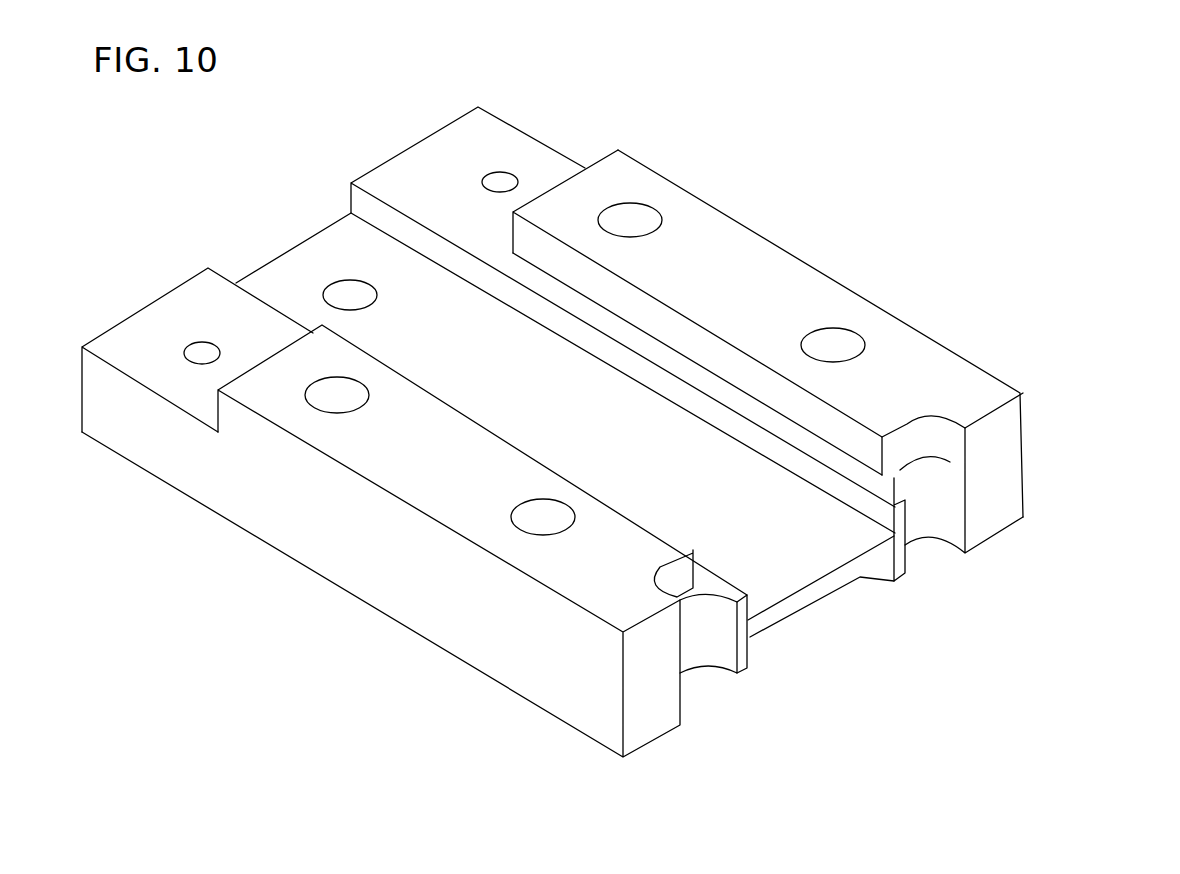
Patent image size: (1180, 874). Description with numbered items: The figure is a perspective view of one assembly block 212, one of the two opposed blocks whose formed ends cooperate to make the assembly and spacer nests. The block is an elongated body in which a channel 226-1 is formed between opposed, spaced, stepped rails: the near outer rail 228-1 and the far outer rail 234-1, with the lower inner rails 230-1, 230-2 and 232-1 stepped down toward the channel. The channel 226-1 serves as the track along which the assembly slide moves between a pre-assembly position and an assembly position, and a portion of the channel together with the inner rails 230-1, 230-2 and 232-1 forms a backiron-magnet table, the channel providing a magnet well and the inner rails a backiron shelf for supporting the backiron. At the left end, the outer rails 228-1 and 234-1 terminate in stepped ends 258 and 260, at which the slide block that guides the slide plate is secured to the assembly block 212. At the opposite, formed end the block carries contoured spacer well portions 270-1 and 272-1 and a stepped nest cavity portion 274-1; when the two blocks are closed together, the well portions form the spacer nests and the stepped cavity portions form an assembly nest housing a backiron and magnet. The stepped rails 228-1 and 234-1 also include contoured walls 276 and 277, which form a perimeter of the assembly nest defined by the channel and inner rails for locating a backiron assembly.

The assembly block 212 is at (866, 268).
The channel 226-1 is at (656, 444).
The stepped rail 228-1 is at (382, 467).
The stepped rail 230-1 is at (705, 580).
The stepped rail 230-2 is at (880, 477).
The stepped rail 232-1 is at (680, 363).
The stepped rail 234-1 is at (682, 222).
The stepped end 258 is at (161, 300).
The stepped end 260 is at (418, 162).
The contoured spacer well portion 270-1 is at (700, 633).
The contoured spacer well portion 272-1 is at (948, 504).
The stepped nest cavity portion 274-1 is at (822, 619).
The contoured wall 276 is at (673, 573).
The contoured wall 277 is at (915, 442).